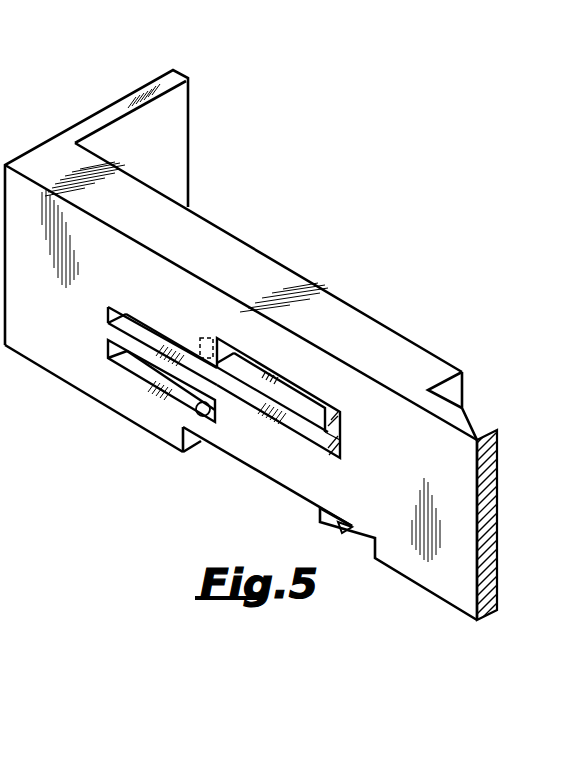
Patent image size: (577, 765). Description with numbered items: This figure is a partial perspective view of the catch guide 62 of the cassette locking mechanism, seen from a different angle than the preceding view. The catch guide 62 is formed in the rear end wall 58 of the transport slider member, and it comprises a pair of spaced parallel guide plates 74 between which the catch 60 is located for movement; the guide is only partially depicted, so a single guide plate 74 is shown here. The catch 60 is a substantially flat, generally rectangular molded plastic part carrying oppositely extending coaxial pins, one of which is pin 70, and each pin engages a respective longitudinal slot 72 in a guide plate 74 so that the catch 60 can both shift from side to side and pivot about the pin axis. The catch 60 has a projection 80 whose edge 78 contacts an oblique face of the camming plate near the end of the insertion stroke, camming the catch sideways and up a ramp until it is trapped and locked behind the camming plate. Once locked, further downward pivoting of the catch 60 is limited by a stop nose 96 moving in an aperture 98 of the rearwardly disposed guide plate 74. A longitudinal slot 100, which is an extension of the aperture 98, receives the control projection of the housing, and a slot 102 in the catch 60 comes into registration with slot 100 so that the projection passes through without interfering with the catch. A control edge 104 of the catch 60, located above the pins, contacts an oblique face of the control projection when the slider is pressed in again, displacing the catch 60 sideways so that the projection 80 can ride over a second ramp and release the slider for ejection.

The rear end wall 58 is at (488, 461).
The catch 60 is at (251, 376).
The catch guide 62 is at (60, 354).
The pin 70 is at (182, 437).
The slot 72 is at (127, 368).
The guide plate 74 is at (463, 386).
The edge 78 is at (338, 518).
The projection 80 is at (339, 534).
The stop nose 96 is at (330, 452).
The aperture 98 is at (295, 420).
The longitudinal slot 100 is at (126, 329).
The slot 102 is at (280, 393).
The control edge 104 is at (199, 351).